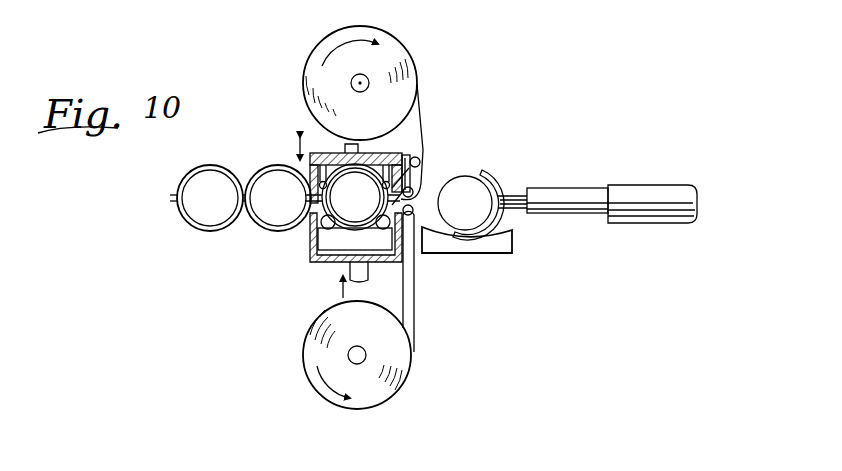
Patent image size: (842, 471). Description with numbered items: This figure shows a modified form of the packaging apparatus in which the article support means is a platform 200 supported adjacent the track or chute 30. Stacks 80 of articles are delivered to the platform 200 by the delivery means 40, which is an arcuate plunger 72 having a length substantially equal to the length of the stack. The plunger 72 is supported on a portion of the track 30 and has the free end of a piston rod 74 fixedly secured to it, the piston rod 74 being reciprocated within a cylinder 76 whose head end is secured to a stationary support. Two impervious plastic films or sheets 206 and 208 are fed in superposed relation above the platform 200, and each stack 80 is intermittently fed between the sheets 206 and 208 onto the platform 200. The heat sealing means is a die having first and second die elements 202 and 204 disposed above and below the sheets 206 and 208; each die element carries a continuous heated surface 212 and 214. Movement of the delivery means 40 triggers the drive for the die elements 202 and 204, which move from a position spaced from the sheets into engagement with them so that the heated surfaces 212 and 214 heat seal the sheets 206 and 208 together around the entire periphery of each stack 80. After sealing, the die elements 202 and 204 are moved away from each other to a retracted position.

The track 30 is at (485, 253).
The delivery means 40 is at (589, 243).
The arcuate plunger 72 is at (490, 170).
The piston rod 74 is at (524, 195).
The cylinder 76 is at (654, 197).
The stack 80 is at (453, 186).
The platform 200 is at (333, 238).
The first die element 202 is at (311, 155).
The second die element 204 is at (312, 262).
The sheet 206 is at (414, 316).
The sheet 208 is at (425, 160).
The continuous heated surface 212 is at (306, 226).
The continuous heated surface 214 is at (292, 168).